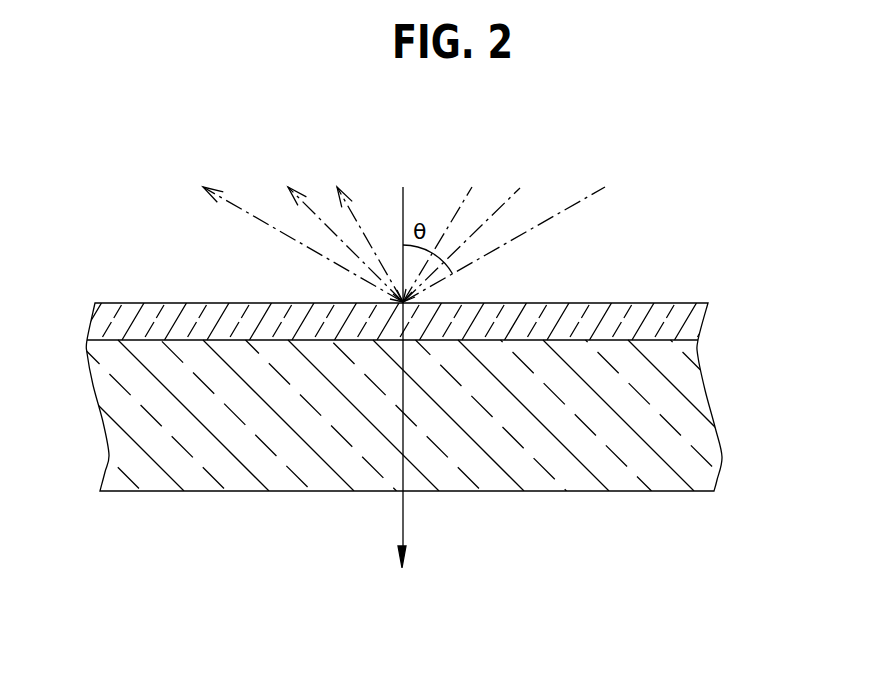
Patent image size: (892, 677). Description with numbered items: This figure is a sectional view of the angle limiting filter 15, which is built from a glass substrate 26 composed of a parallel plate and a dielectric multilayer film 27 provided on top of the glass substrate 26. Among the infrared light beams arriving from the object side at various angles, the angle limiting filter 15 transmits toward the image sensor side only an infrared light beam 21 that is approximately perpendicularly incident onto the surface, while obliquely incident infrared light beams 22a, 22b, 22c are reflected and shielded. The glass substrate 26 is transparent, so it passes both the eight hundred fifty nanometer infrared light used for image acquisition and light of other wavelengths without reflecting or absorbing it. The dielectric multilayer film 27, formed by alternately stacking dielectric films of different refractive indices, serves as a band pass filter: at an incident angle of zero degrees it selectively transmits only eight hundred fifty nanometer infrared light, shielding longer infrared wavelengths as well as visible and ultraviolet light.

The angle limiting filter 15 is at (411, 425).
The infrared light beam 21 is at (403, 207).
The infrared light beam 22a is at (458, 210).
The infrared light beam 22b is at (498, 208).
The infrared light beam 22c is at (569, 207).
The glass substrate 26 is at (643, 482).
The dielectric multilayer film 27 is at (697, 304).